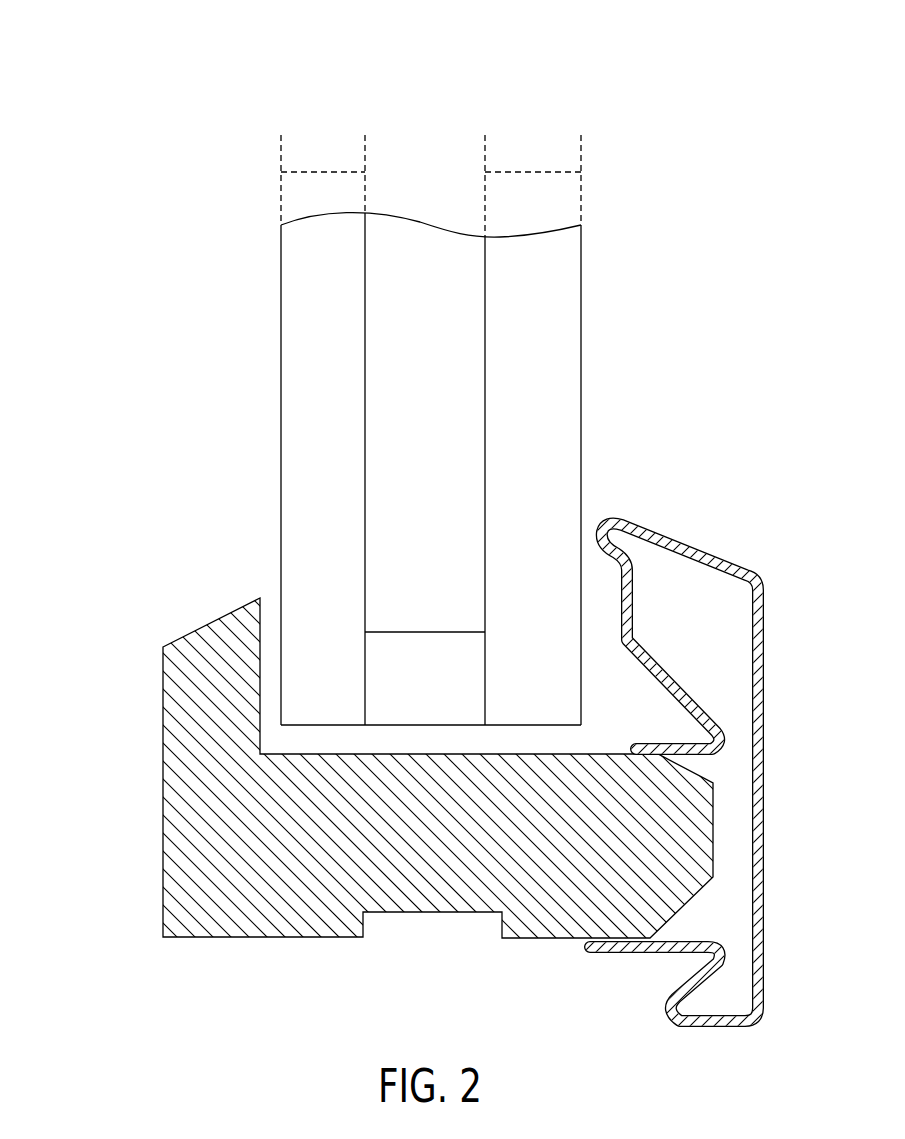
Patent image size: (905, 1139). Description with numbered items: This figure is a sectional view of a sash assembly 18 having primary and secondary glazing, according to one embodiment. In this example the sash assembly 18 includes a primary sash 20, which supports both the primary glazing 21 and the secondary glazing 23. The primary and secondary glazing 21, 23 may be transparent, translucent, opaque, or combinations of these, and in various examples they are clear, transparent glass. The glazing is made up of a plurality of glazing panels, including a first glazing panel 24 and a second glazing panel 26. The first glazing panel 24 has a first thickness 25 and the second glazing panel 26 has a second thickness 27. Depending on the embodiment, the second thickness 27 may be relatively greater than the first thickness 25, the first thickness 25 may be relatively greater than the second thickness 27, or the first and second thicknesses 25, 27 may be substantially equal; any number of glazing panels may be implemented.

The sash assembly 18 is at (427, 362).
The primary sash 20 is at (163, 805).
The primary glazing 21 is at (246, 381).
The secondary glazing 23 is at (611, 382).
The first glazing panel 24 is at (280, 367).
The first thickness 25 is at (320, 170).
The second glazing panel 26 is at (581, 387).
The second thickness 27 is at (533, 170).